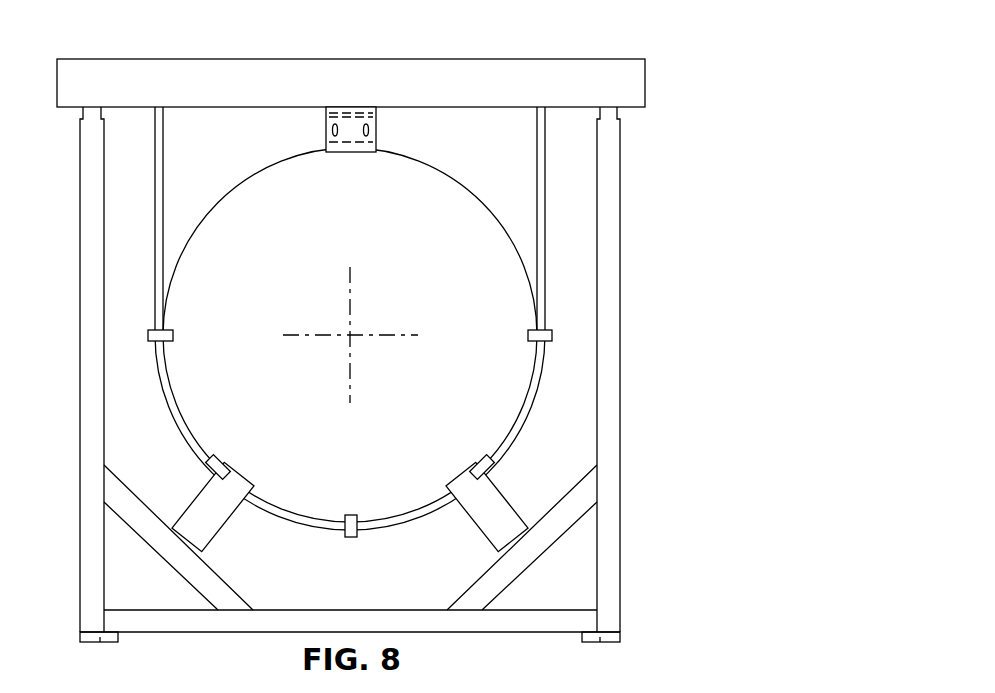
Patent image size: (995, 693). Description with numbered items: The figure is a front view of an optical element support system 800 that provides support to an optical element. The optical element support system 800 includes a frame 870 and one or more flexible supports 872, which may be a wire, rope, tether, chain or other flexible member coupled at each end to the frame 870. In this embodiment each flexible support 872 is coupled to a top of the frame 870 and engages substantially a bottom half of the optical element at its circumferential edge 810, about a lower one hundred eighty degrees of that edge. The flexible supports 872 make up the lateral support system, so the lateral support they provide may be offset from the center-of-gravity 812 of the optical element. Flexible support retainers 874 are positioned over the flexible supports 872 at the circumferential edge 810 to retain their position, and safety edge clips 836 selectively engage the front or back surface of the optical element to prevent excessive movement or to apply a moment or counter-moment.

The optical element support system 800 is at (421, 321).
The circumferential edge 810 is at (443, 171).
The center-of-gravity 812 is at (352, 333).
The safety edge clip 836 is at (350, 128).
The frame 870 is at (521, 77).
The flexible support 872 is at (545, 155).
The flexible support retainer 874 is at (487, 470).